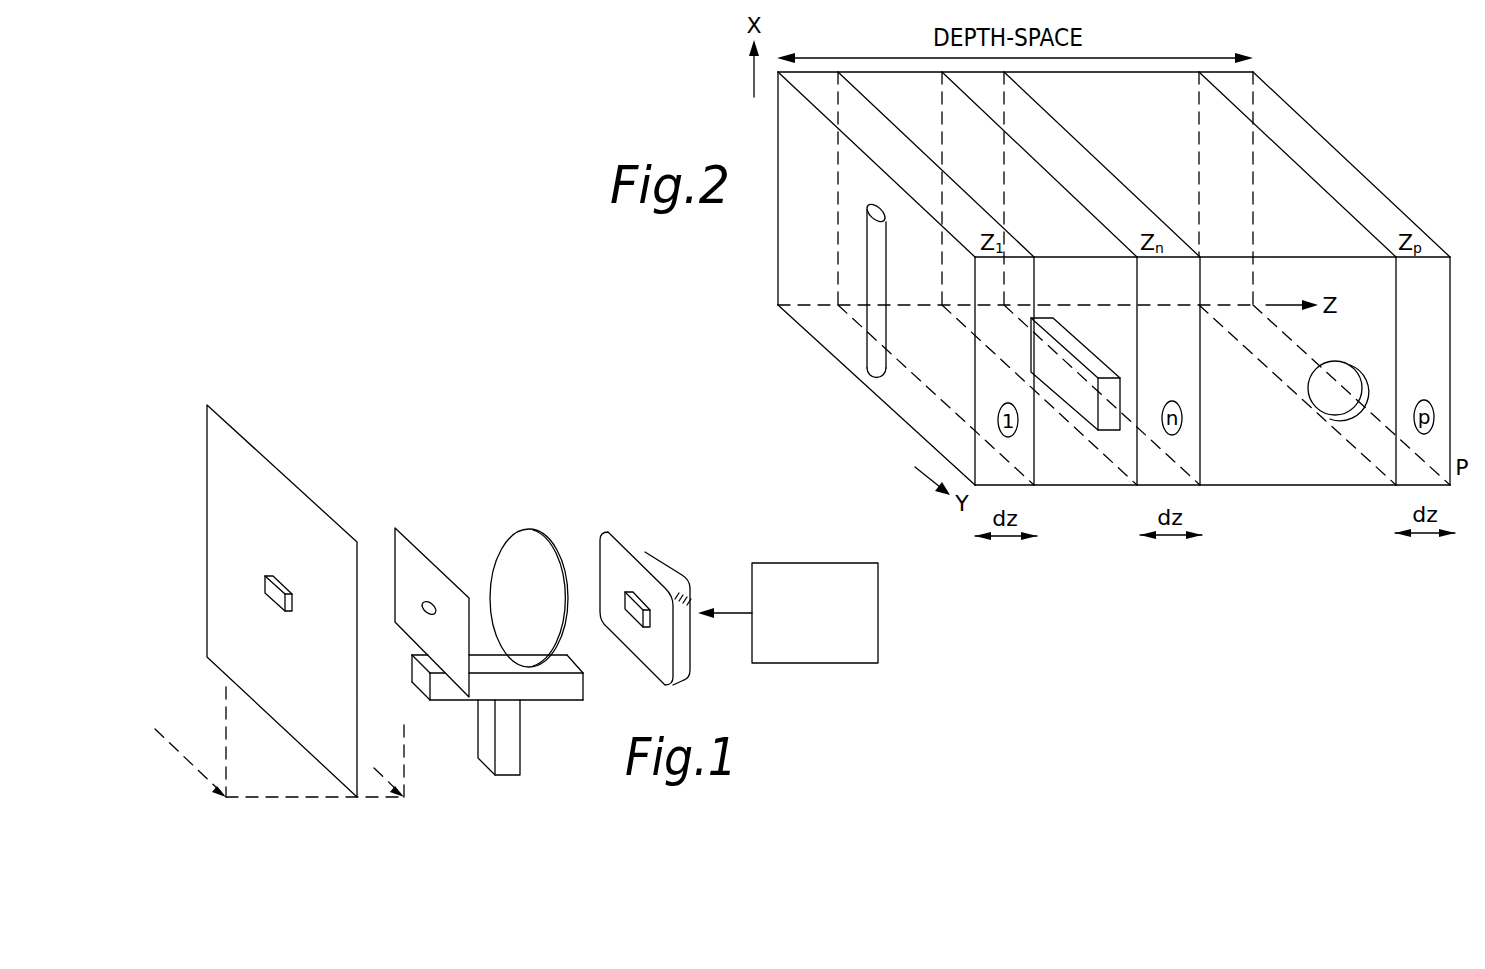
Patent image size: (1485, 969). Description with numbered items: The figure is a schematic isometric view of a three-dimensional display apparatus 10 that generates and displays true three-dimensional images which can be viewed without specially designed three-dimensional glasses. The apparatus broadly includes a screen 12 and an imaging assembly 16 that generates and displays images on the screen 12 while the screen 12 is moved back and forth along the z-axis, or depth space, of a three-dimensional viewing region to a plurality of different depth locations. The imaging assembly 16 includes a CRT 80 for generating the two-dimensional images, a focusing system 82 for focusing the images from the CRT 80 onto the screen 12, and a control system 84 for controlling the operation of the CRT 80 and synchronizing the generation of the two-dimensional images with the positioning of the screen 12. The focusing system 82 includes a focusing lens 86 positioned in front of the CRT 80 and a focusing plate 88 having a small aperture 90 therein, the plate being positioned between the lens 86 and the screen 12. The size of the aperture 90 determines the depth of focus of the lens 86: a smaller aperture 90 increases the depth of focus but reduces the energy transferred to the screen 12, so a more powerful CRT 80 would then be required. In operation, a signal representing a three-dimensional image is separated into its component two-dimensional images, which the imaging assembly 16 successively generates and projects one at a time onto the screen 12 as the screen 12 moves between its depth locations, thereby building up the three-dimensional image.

The three-dimensional display apparatus 10 is at (518, 368).
The screen 12 is at (281, 468).
The imaging assembly 16 is at (601, 455).
The CRT 80 is at (633, 556).
The focusing system 82 is at (493, 525).
The control system 84 is at (872, 571).
The focusing lens 86 is at (537, 541).
The focusing plate 88 is at (432, 564).
The aperture 90 is at (426, 614).